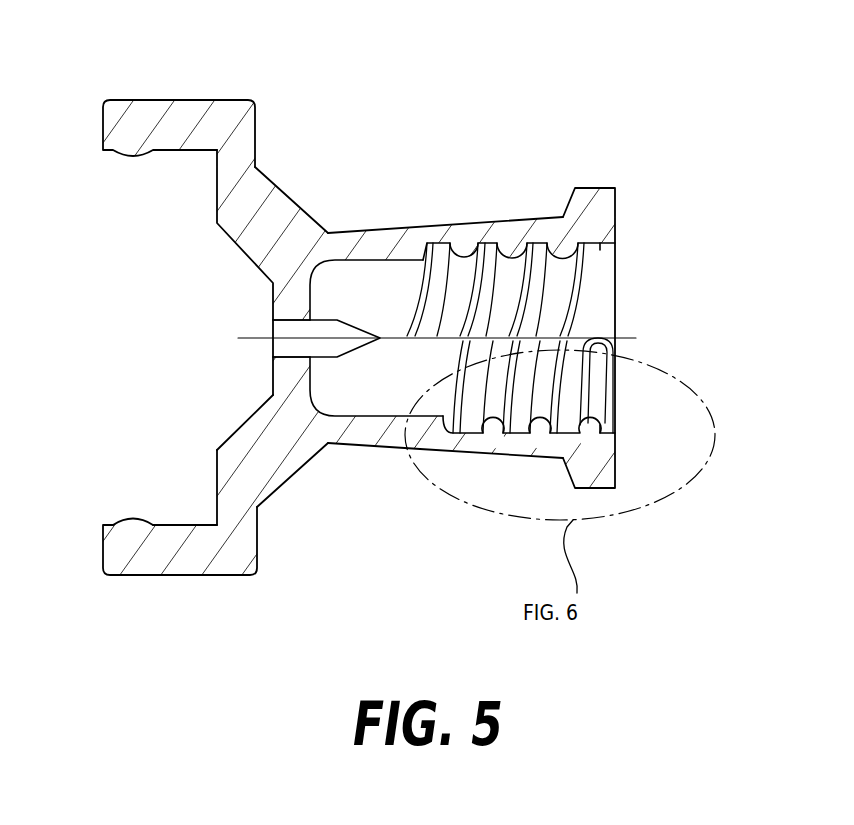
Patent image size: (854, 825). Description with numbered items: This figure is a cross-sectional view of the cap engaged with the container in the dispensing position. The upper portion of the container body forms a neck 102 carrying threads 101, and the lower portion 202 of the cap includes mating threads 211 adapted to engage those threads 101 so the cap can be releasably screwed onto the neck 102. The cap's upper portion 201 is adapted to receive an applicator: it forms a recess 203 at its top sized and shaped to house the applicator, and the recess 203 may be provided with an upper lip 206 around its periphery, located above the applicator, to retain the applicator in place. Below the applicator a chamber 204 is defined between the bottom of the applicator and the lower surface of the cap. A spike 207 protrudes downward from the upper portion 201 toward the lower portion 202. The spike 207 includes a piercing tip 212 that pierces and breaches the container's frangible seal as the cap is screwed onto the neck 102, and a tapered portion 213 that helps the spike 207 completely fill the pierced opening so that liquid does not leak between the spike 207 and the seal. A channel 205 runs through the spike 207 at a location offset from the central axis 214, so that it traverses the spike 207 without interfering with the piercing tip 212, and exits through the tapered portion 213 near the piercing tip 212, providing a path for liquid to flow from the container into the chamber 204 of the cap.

The threads 101 is at (530, 290).
The neck 102 is at (600, 273).
The upper portion 201 is at (163, 100).
The lower portion 202 is at (411, 232).
The recess 203 is at (175, 493).
The chamber 204 is at (237, 390).
The channel 205 is at (292, 330).
The upper lip 206 is at (130, 513).
The spike 207 is at (310, 300).
The mating threads 211 is at (464, 243).
The piercing tip 212 is at (372, 440).
The tapered portion 213 is at (350, 318).
The central axis 214 is at (272, 332).